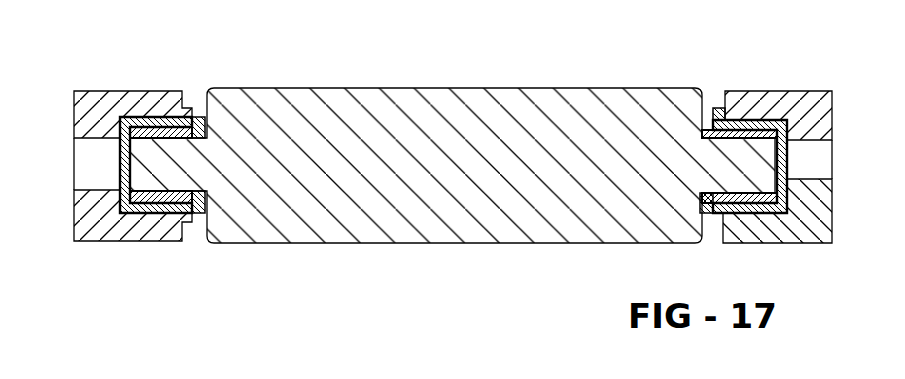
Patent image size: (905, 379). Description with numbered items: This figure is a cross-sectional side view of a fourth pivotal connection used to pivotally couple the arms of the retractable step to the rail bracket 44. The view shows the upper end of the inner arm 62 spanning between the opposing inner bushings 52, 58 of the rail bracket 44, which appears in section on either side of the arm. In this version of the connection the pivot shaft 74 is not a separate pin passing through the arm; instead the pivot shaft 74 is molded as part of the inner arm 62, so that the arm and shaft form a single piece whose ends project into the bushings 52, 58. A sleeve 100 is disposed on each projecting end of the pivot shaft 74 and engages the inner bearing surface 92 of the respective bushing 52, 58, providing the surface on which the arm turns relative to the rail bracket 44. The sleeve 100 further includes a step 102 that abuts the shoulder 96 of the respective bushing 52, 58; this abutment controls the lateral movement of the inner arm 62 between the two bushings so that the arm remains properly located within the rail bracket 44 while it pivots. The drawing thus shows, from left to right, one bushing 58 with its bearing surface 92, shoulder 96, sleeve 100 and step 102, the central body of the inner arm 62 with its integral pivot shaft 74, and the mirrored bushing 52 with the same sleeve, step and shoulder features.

The inner arm 62 is at (442, 100).
The pivot shaft 74 is at (158, 172).
The rail bracket 44 is at (87, 232).
The inner bearing surface 92 is at (134, 200).
The sleeve 100 is at (165, 125).
The step 102 is at (200, 117).
The shoulder 96 is at (190, 220).
The inner bushing 58 is at (128, 122).
The inner bushing 52 is at (777, 213).